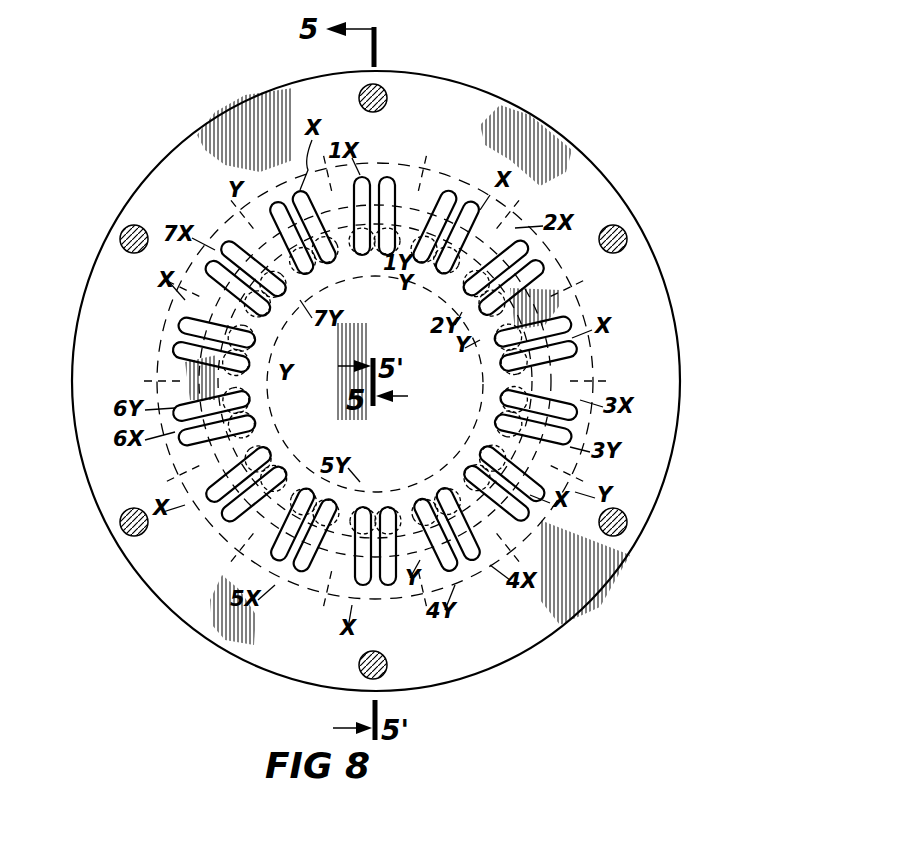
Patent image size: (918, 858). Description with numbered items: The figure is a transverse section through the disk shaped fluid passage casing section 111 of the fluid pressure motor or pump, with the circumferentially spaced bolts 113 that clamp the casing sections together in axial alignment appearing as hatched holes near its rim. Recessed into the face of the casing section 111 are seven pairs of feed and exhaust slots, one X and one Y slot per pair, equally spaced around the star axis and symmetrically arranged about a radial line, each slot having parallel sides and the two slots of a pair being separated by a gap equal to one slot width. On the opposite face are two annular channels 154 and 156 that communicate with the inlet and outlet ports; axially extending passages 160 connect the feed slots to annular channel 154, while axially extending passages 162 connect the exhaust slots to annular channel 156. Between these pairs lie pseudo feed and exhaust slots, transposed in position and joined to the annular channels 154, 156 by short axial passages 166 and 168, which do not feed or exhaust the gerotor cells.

The fluid passage casing section 111 is at (582, 153).
The bolts 113 is at (122, 232).
The annular channel 154 is at (185, 476).
The annular channel 156 is at (160, 355).
The axially extending passages 160 is at (360, 260).
The axially extending passages 162 is at (406, 180).
The short axial passages 166 is at (340, 215).
The short axial passages 168 is at (259, 198).